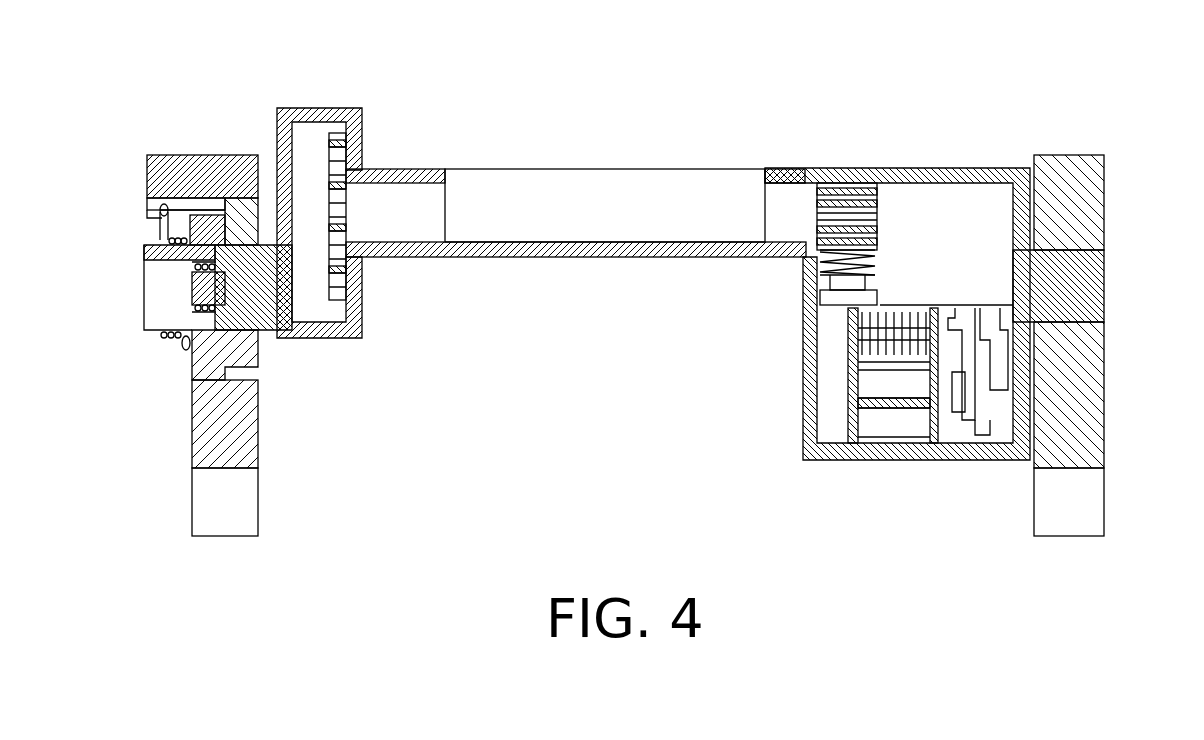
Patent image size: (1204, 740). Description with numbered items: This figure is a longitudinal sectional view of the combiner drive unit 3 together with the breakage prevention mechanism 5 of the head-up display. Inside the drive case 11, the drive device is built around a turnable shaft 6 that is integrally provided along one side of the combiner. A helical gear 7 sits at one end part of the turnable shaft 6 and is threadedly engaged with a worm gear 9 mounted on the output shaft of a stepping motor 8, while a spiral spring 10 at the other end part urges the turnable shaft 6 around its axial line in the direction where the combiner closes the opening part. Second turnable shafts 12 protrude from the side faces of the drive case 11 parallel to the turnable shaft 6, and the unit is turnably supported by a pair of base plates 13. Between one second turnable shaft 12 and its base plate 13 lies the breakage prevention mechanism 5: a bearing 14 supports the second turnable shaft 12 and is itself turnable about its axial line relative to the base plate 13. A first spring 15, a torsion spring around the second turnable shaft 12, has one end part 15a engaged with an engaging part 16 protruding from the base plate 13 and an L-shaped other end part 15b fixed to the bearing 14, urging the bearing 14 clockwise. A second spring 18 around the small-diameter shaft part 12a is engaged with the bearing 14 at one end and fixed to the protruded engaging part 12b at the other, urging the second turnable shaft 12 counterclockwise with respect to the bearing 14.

The combiner drive unit 3 is at (790, 373).
The breakage prevention mechanism 5 is at (130, 268).
The turnable shaft 6 is at (424, 198).
The helical gear 7 is at (858, 183).
The stepping motor 8 is at (848, 386).
The worm gear 9 is at (877, 260).
The spiral spring 10 is at (334, 148).
The drive case 11 is at (803, 308).
The second turnable shaft 12 is at (262, 312).
The shaft part 12a is at (192, 284).
The engaging part 12b is at (207, 206).
The base plate 13 is at (1085, 434).
The bearing 14 is at (202, 372).
The first spring 15 is at (166, 342).
The one end part 15a is at (160, 206).
The other end part 15b is at (180, 352).
The engaging part 16 is at (180, 208).
The second spring 18 is at (195, 311).